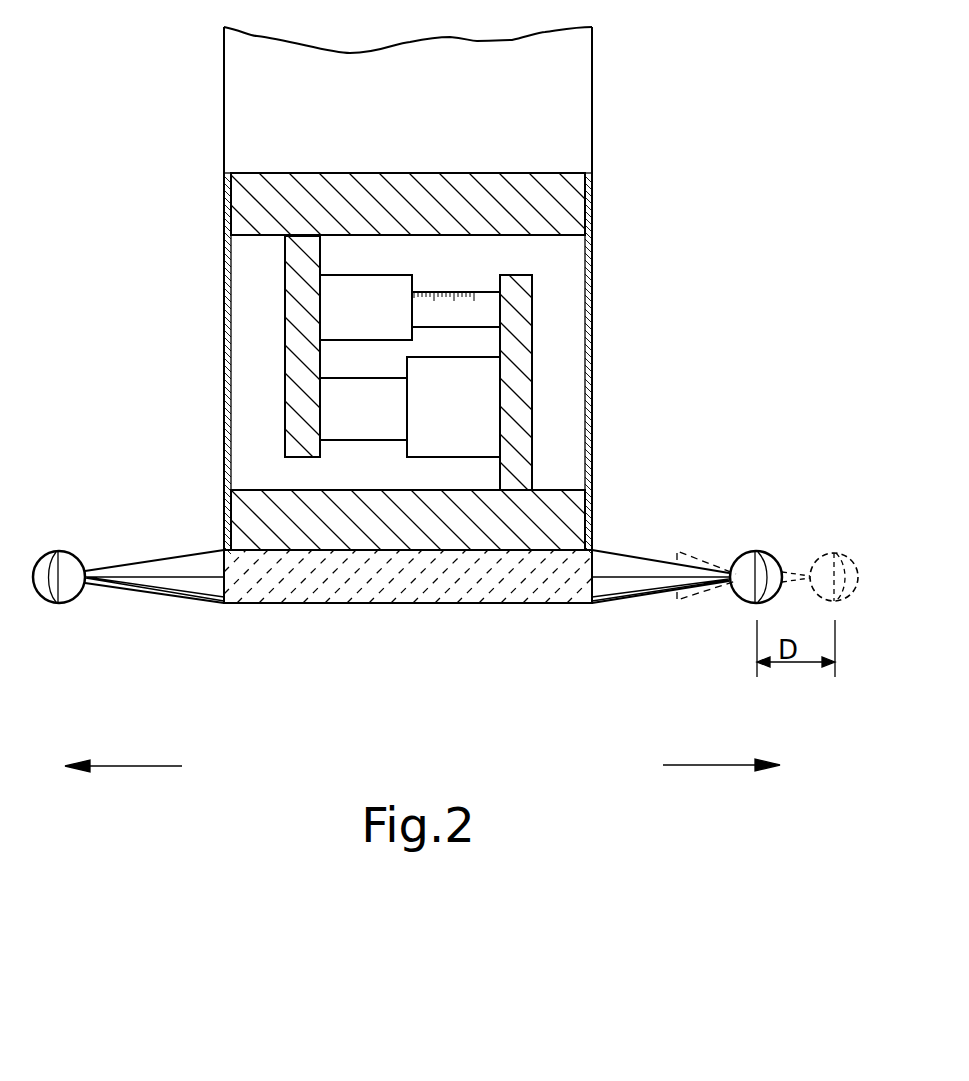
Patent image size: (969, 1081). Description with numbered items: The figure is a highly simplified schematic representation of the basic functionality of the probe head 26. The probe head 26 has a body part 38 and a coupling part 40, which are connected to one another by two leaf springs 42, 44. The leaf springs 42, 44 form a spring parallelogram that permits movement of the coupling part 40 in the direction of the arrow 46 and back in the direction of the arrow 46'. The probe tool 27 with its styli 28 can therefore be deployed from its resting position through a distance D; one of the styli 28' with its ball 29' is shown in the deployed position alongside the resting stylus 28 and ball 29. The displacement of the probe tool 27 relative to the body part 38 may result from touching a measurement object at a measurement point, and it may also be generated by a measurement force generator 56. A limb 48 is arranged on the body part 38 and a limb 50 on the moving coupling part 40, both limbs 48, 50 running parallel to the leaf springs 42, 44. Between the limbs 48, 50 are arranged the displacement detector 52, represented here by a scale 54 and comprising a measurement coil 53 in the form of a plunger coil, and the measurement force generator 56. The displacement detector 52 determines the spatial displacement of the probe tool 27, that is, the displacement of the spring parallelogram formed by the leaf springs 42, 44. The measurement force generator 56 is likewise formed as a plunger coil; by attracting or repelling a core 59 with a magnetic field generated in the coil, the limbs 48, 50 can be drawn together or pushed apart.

The probe head 26 is at (618, 286).
The probe tool 27 is at (380, 604).
The styli 28 is at (407, 651).
The stylus in deployed position 28' is at (743, 633).
The ball 29 is at (411, 585).
The ball in deployed position 29' is at (846, 525).
The body part 38 is at (338, 207).
The coupling part 40 is at (268, 513).
The leaf spring 42 is at (224, 365).
The leaf spring 44 is at (594, 416).
The arrow 46 is at (123, 851).
The arrow 46' is at (721, 850).
The limb 48 is at (300, 423).
The limb 50 is at (517, 364).
The displacement detector 52 is at (448, 262).
The measurement coil 53 is at (350, 308).
The scale 54 is at (462, 290).
The measurement force generator 56 is at (458, 428).
The core 59 is at (370, 420).